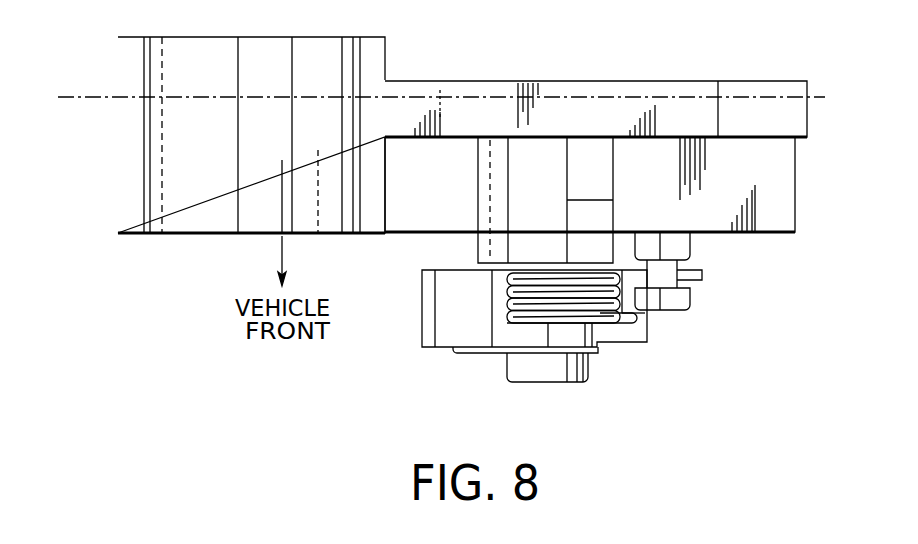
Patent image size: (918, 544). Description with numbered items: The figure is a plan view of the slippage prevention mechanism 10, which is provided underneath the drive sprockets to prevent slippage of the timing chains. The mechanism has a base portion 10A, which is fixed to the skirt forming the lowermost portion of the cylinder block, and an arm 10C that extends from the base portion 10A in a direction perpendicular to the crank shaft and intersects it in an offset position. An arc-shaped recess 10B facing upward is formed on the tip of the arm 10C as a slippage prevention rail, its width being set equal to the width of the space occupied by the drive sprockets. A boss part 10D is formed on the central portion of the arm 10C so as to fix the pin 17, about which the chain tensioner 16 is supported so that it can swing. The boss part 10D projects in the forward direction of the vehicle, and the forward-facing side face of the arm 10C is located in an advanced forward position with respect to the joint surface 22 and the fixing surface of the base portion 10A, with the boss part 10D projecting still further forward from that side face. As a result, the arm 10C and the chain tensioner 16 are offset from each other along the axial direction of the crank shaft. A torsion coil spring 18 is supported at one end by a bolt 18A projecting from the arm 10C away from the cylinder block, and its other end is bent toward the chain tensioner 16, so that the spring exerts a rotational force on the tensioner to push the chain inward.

The slippage prevention mechanism 10 is at (572, 72).
The base portion 10A is at (743, 107).
The arc-shaped recess 10B is at (222, 218).
The arm 10C is at (157, 235).
The boss part 10D is at (517, 215).
The joint surface 22 is at (82, 103).
The chain tensioner 16 is at (447, 317).
The pin 17 is at (545, 365).
The torsion coil spring 18 is at (597, 303).
The bolt 18A is at (680, 300).